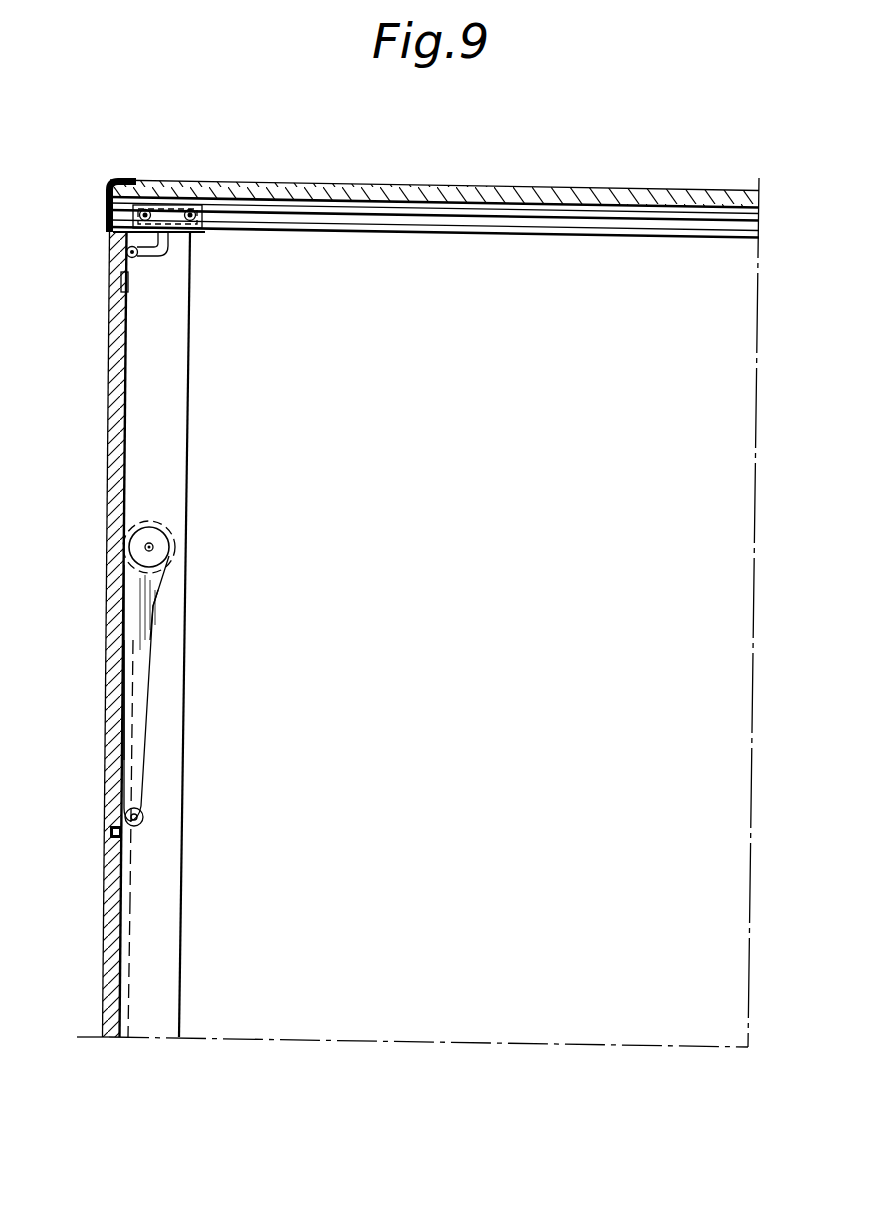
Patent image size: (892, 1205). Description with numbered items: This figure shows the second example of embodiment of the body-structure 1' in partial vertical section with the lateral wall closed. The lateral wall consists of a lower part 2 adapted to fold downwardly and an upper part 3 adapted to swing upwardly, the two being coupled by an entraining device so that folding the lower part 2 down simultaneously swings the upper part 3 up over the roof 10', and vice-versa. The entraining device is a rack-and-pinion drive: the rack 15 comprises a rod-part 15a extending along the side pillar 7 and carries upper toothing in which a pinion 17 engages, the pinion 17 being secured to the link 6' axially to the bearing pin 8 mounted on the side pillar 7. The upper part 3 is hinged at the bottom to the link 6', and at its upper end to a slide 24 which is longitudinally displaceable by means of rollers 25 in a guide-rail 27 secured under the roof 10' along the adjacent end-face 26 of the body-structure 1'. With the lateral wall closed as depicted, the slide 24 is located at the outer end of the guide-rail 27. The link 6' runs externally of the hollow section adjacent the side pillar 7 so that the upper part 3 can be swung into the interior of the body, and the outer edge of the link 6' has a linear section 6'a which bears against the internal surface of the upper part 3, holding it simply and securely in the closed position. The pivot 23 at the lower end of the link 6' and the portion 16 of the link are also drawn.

The body-structure 1' is at (434, 165).
The roof 10' is at (434, 174).
The guide-rail 27 is at (341, 222).
The slide 24 is at (168, 212).
The rollers 25 is at (146, 204).
The upper part 3 is at (117, 422).
The lower part 2 is at (105, 950).
The side pillar 7 is at (190, 428).
The bearing pin 8 is at (153, 545).
The pinion 17 is at (175, 560).
The arm upper portion 16 is at (158, 600).
The link 6' is at (184, 688).
The linear section 6'a is at (78, 700).
The pivot pin 23 is at (143, 803).
The rack 15 is at (135, 887).
The rod-part 15a is at (125, 975).
The end-face 26 is at (505, 620).